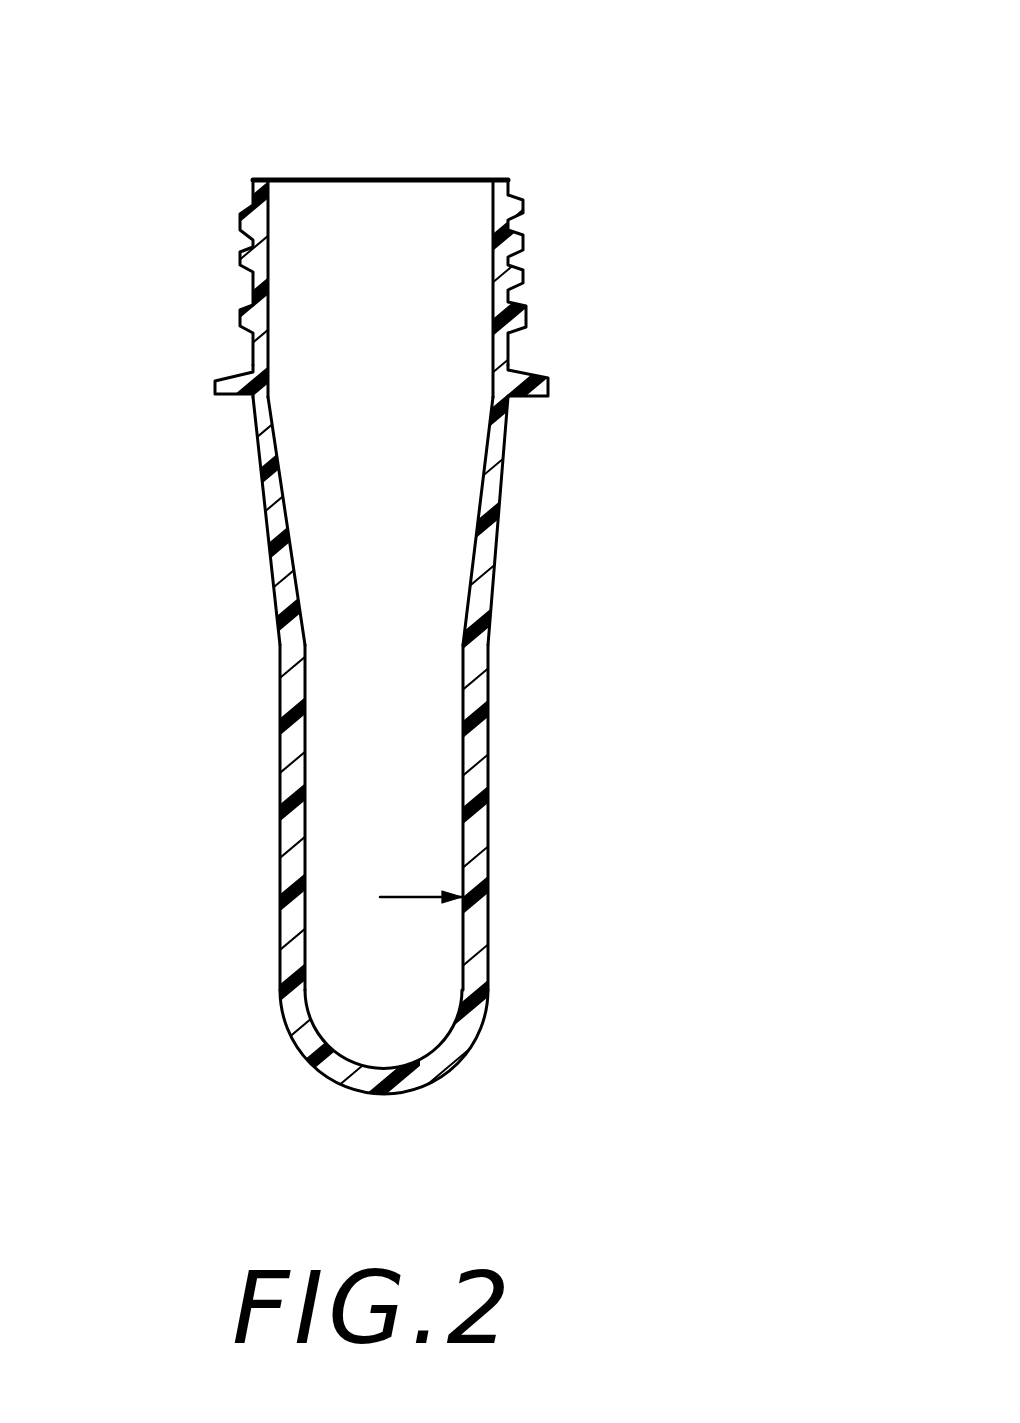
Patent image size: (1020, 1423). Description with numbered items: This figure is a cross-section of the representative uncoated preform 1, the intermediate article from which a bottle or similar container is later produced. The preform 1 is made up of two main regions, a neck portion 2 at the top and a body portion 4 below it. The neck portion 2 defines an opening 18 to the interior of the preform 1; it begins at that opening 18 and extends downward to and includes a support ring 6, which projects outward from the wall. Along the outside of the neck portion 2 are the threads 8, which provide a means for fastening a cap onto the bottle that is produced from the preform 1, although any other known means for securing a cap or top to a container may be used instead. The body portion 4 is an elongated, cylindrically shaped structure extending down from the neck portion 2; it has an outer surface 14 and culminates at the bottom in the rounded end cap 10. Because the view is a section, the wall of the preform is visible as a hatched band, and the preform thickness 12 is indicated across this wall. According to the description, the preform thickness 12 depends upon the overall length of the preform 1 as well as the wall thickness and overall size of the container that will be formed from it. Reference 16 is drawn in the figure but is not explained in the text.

The uncoated preform 1 is at (438, 660).
The neck portion 2 is at (448, 199).
The body portion 4 is at (438, 782).
The support ring 6 is at (548, 381).
The threads 8 is at (520, 241).
The rounded end cap 10 is at (388, 1097).
The preform thickness 12 is at (487, 895).
The outer surface 14 is at (490, 733).
The transition region 16 is at (470, 570).
The opening 18 is at (368, 240).